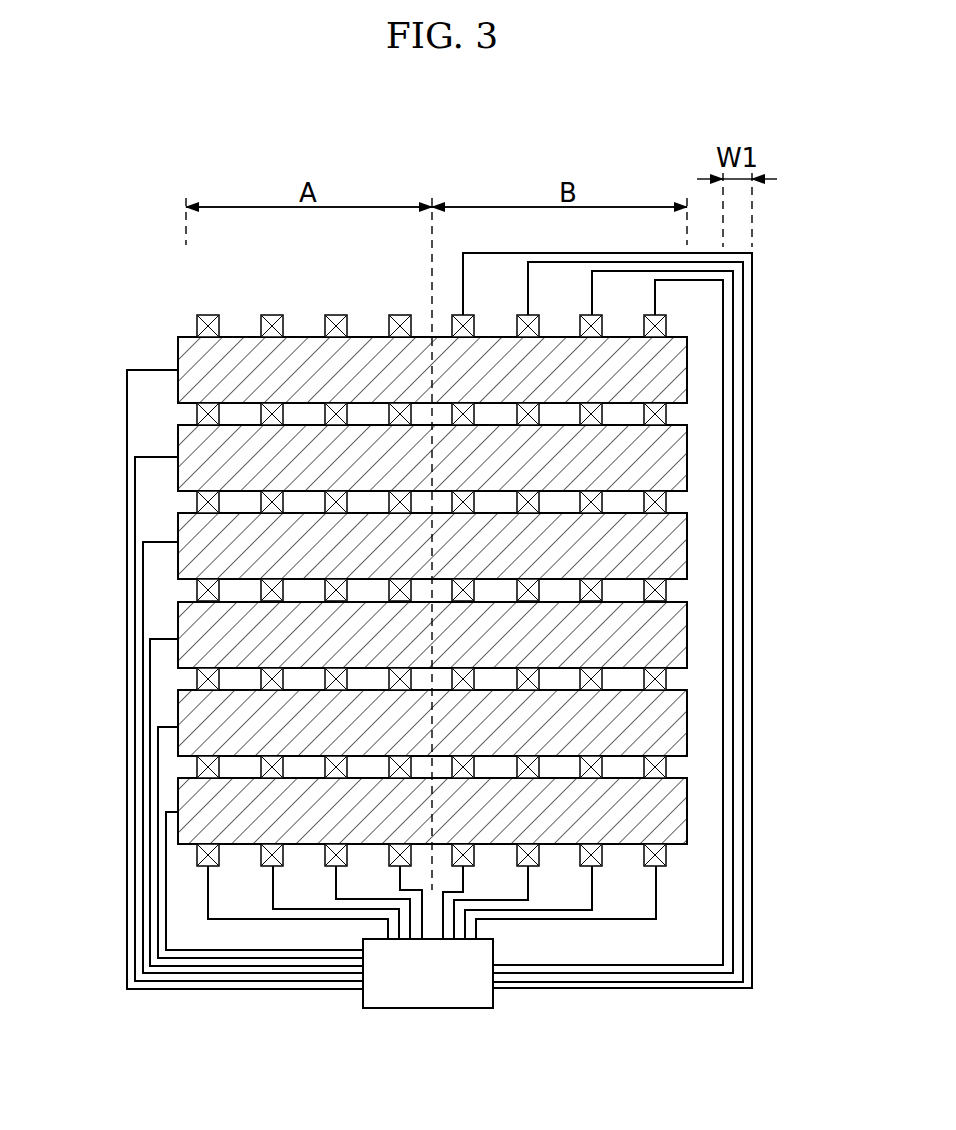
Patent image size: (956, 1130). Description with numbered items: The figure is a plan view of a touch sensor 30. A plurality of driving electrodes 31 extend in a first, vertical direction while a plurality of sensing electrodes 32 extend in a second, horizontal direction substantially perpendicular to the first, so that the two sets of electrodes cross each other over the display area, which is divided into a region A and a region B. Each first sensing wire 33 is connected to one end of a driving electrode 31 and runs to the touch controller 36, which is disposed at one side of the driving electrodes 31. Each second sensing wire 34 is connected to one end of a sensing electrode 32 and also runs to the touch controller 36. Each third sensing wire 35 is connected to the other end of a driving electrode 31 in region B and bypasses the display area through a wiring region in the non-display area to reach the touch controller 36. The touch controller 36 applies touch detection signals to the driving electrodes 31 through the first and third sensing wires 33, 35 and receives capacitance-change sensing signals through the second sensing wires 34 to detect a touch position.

The touch sensor 30 is at (150, 270).
The driving electrodes 31 is at (208, 313).
The sensing electrodes 32 is at (178, 342).
The first sensing wires 33 is at (657, 891).
The second sensing wires 34 is at (133, 486).
The third sensing wires 35 is at (753, 620).
The touch controller 36 is at (430, 1008).